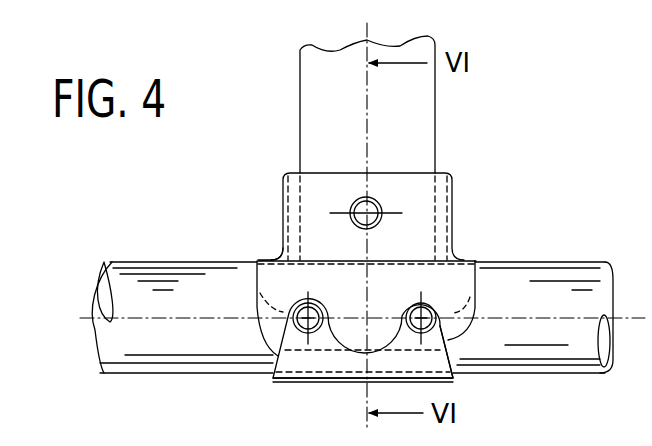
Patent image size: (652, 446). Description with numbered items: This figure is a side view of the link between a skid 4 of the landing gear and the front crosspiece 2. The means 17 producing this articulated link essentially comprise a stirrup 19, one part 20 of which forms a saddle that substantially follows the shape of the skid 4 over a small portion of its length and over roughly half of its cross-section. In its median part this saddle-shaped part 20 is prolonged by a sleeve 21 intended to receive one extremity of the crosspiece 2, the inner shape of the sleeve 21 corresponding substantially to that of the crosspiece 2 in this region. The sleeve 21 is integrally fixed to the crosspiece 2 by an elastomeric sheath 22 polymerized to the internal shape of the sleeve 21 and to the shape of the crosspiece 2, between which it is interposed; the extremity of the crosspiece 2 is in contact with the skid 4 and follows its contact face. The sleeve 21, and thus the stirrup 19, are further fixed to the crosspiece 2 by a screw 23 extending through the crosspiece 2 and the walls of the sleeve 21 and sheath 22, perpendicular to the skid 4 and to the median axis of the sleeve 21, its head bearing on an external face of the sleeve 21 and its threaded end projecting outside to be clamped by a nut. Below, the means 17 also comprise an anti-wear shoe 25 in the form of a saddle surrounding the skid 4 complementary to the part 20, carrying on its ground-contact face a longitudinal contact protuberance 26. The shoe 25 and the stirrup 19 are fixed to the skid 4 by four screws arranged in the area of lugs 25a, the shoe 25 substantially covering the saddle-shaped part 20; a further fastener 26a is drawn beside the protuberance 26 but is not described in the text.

The vertical tube 2 is at (320, 80).
The horizontal tube 4 is at (562, 297).
The connector 17 is at (480, 217).
The shoulder of sleeve 19 is at (278, 240).
The saddle 20 is at (460, 280).
The sleeve 21 is at (405, 190).
The sleeve wall 22 is at (445, 198).
The fastening screw 23 is at (356, 202).
The clamping plate 25 is at (327, 362).
The clamping bolt 25a is at (293, 322).
The clamping plate edge 26 is at (447, 380).
The clamping bolt 26a is at (447, 337).